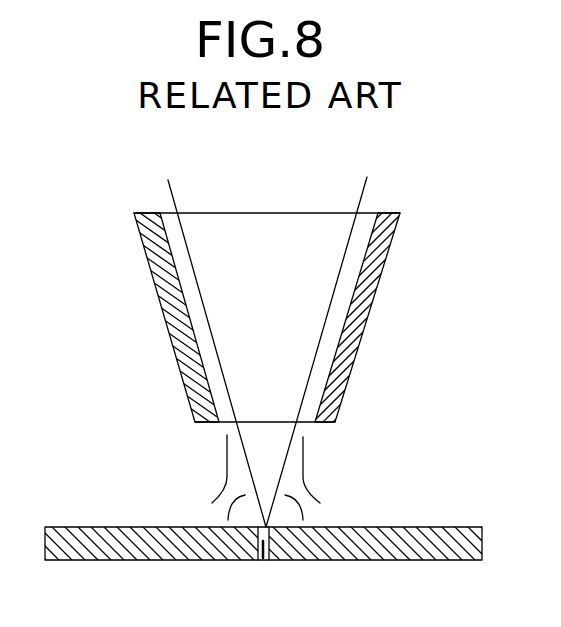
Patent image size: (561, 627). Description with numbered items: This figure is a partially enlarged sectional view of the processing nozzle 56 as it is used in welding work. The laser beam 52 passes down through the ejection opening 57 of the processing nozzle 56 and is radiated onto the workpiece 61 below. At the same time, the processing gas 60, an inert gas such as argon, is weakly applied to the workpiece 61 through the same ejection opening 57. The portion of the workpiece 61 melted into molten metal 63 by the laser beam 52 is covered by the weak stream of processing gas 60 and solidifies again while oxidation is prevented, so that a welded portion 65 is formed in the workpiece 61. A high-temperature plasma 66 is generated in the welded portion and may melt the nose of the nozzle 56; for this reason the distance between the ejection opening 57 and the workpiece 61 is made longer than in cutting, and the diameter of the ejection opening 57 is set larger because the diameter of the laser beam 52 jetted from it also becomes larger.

The laser beam 52 is at (173, 196).
The processing nozzle 56 is at (362, 318).
The ejection opening 57 is at (222, 430).
The processing gas 60 is at (305, 462).
The workpiece 61 is at (475, 528).
The molten metal 63 is at (273, 560).
The welded portion 65 is at (262, 560).
The high-temperature plasma 66 is at (232, 508).